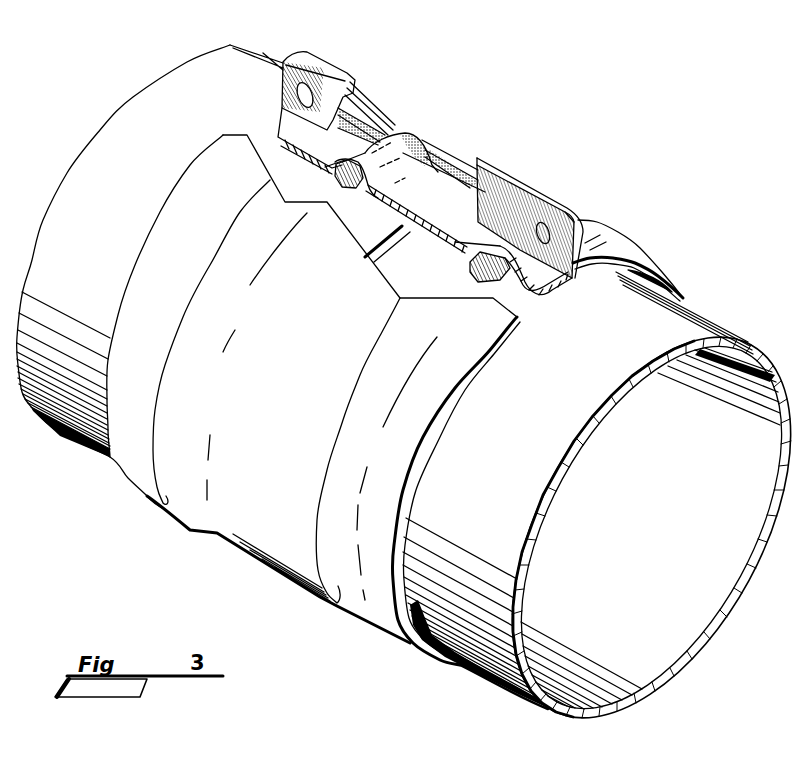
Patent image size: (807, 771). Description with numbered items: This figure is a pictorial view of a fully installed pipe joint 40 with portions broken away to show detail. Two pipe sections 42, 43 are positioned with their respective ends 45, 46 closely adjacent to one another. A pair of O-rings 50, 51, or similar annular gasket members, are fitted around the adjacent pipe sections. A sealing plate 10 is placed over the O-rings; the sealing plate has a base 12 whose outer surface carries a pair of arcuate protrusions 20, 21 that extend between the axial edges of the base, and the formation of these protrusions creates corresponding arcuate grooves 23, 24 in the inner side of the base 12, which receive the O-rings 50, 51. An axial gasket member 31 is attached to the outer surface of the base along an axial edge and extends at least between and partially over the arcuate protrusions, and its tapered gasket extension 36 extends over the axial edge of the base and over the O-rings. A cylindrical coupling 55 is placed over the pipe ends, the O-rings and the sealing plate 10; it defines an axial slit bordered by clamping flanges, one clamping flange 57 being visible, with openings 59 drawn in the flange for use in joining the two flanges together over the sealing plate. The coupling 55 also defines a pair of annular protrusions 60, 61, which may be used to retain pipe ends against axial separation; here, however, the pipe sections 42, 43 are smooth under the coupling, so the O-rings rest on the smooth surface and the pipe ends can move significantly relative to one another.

The sealing plate 10 is at (290, 127).
The base 12 is at (432, 208).
The arcuate protrusion 20 is at (502, 243).
The arcuate protrusion 21 is at (383, 157).
The arcuate groove 23 is at (508, 283).
The arcuate groove 24 is at (333, 178).
The axial gasket member 31 is at (365, 128).
The gasket extension 36 is at (408, 142).
The pipe joint 40 is at (526, 102).
The pipe section 42 is at (602, 371).
The pipe section 43 is at (146, 151).
The pipe end 45 is at (395, 246).
The pipe end 46 is at (382, 238).
The O-ring 50 is at (467, 263).
The O-ring 51 is at (447, 143).
The cylindrical coupling 55 is at (291, 412).
The clamping flange 57 is at (518, 177).
The bolt hole 59 is at (312, 92).
The annular protrusion 60 is at (597, 223).
The annular protrusion 61 is at (157, 498).